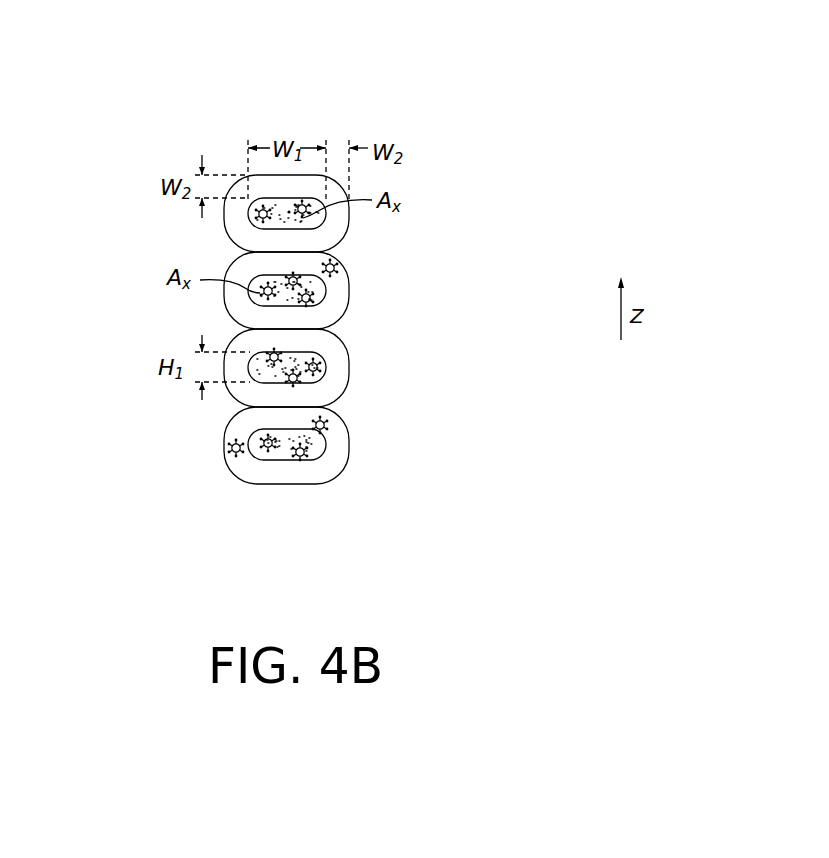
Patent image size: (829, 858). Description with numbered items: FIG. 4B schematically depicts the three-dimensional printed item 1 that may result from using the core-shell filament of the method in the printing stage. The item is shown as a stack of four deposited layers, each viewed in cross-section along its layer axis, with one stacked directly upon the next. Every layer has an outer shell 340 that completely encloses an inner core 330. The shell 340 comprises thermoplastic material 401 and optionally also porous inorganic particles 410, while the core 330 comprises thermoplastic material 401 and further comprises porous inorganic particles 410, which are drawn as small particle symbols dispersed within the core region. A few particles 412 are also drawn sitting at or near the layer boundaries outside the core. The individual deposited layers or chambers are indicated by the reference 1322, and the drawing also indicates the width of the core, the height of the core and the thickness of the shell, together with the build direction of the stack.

The 3D item 1 is at (421, 76).
The thermoplastic material 401 is at (233, 188).
The porous inorganic particles 410 is at (306, 206).
The loose particles 412 is at (229, 450).
The chamber 1322 is at (190, 222).
The shell 340 is at (337, 366).
The core 330 is at (312, 443).